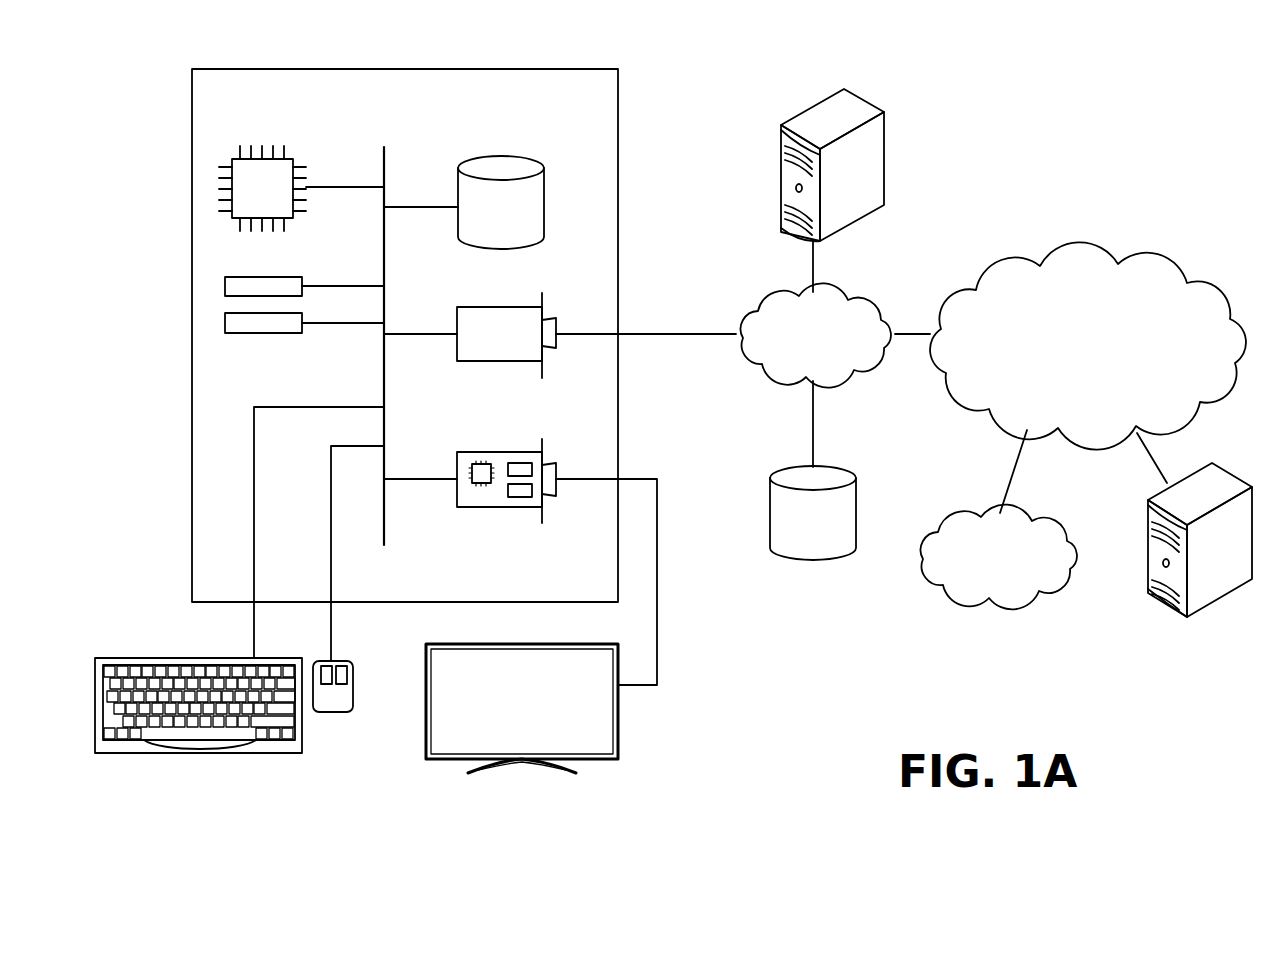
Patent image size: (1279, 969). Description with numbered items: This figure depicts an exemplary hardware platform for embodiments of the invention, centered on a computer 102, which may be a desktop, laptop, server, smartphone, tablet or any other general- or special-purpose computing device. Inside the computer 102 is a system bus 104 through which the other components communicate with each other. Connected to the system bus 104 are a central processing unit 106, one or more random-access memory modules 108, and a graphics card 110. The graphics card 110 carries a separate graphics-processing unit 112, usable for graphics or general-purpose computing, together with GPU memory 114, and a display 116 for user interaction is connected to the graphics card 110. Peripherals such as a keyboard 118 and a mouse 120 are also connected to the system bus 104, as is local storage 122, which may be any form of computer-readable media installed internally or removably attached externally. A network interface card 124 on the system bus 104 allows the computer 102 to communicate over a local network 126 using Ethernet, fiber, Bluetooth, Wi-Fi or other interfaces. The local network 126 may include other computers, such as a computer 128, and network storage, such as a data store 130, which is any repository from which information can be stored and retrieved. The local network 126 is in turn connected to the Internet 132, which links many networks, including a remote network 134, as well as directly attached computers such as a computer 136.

The computer 102 is at (572, 68).
The system bus 104 is at (386, 158).
The central processing unit 106 is at (293, 152).
The random-access memory modules 108 is at (302, 317).
The graphics card 110 is at (536, 546).
The graphics-processing unit 112 is at (481, 484).
The GPU memory 114 is at (520, 497).
The display 116 is at (621, 738).
The keyboard 118 is at (200, 755).
The mouse 120 is at (330, 712).
The local storage 122 is at (545, 190).
The network interface card 124 is at (457, 320).
The local network 126 is at (872, 292).
The computer 128 is at (870, 99).
The data store 130 is at (846, 468).
The Internet 132 is at (1135, 254).
The remote network 134 is at (1055, 514).
The computer 136 is at (1228, 470).